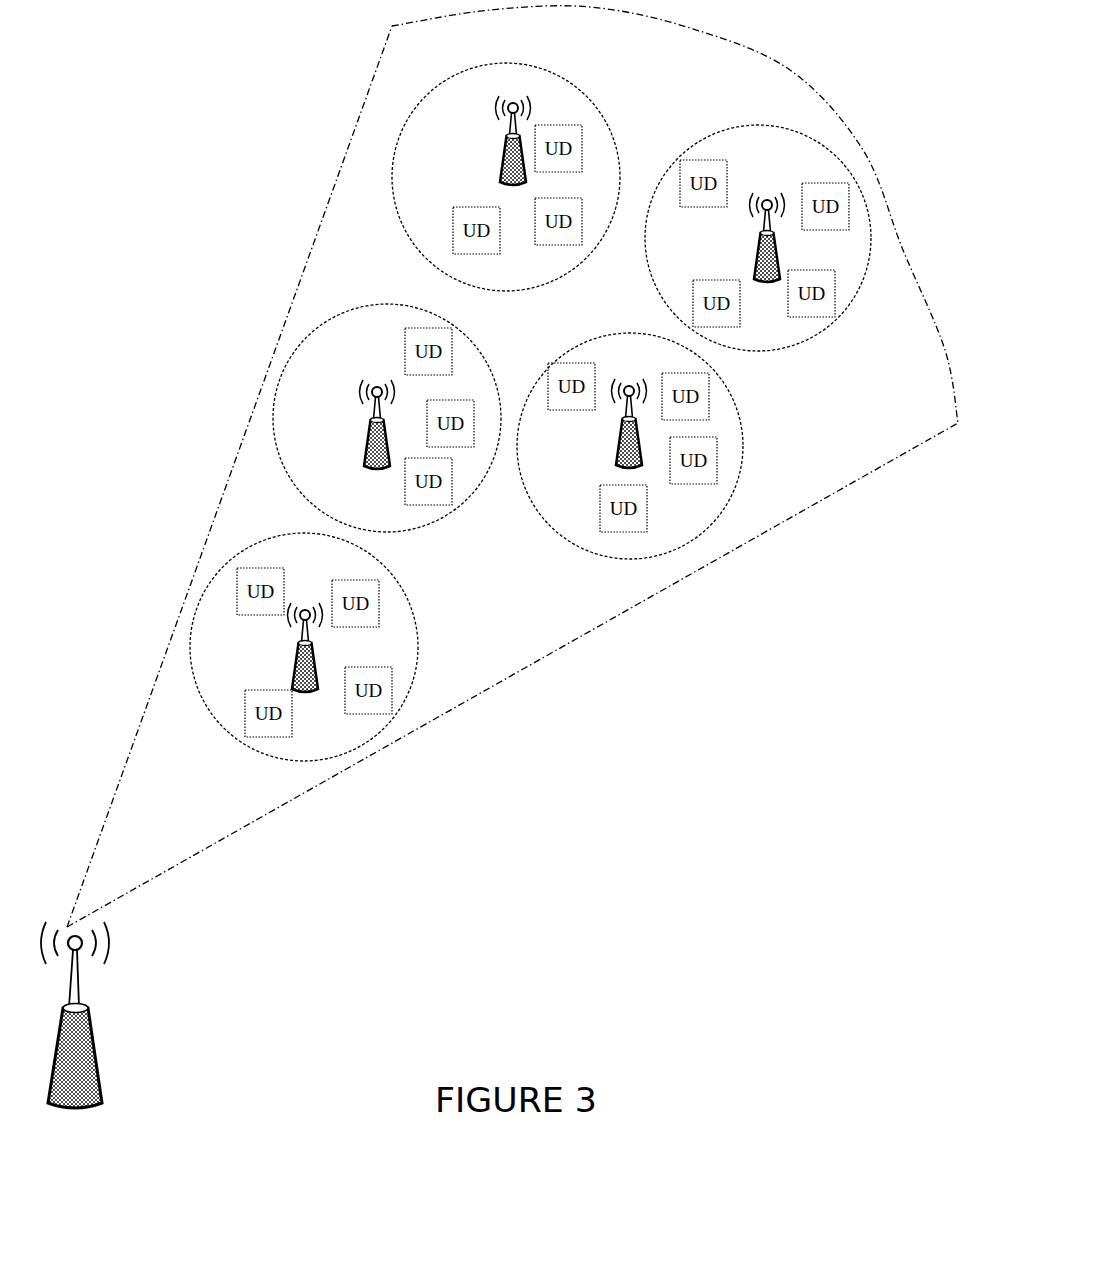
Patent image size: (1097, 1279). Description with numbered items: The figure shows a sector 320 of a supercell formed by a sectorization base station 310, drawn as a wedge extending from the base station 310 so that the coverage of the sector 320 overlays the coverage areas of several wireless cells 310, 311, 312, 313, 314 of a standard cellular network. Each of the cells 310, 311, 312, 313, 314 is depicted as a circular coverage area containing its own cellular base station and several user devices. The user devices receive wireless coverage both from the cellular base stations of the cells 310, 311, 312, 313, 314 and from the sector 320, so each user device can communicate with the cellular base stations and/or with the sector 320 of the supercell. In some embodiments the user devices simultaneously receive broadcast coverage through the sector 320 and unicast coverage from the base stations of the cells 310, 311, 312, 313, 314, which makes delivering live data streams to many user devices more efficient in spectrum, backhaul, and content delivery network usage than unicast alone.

The sectorization base station 310 is at (467, 184).
The wireless cell 311 is at (700, 256).
The wireless cell 312 is at (322, 427).
The wireless cell 313 is at (575, 452).
The wireless cell 314 is at (250, 651).
The sector 320 is at (539, 614).